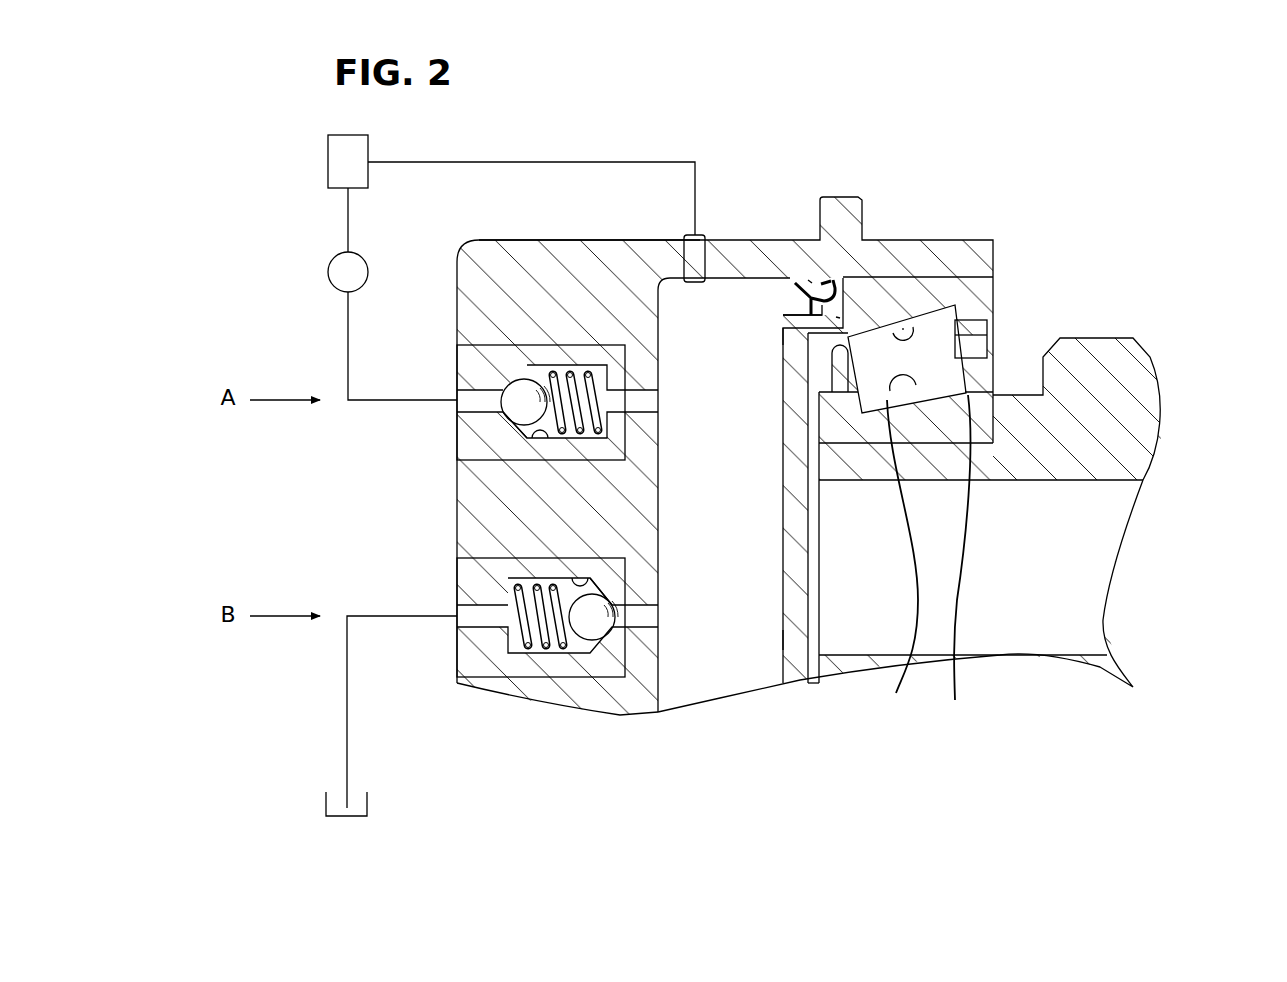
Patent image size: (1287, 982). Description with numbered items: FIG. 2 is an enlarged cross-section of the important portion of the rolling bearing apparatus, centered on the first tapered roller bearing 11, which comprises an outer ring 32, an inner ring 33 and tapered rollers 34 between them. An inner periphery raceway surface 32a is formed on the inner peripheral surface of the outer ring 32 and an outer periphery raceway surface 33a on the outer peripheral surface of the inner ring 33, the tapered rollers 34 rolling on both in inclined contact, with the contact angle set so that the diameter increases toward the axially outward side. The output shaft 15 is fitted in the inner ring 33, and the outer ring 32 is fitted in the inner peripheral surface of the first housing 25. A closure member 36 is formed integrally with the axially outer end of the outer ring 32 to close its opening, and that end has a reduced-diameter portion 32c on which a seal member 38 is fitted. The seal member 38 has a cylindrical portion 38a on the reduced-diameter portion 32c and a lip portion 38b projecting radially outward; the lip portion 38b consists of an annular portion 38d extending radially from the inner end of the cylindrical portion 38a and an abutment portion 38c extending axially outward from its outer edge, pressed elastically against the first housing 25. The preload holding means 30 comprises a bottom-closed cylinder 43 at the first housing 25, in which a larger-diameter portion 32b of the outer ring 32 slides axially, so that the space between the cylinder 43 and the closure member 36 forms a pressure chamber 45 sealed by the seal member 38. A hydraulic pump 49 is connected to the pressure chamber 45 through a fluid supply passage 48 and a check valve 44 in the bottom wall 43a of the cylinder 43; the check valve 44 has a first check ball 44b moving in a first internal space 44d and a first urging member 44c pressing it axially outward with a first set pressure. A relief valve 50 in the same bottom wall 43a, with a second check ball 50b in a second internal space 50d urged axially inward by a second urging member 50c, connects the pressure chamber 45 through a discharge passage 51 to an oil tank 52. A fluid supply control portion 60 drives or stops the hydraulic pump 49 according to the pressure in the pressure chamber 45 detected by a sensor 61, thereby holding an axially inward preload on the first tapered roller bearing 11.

The first tapered roller bearing 11 is at (995, 243).
The output shaft 15 is at (1135, 410).
The first housing 25 is at (566, 236).
The preload holding means 30 is at (340, 478).
The outer ring 32 is at (944, 294).
The inner periphery raceway surface 32a is at (903, 328).
The larger-diameter portion 32b is at (942, 290).
The reduced-diameter portion 32c is at (786, 330).
The inner ring 33 is at (958, 562).
The outer periphery raceway surface 33a is at (896, 563).
The tapered rollers 34 is at (960, 316).
The closure member 36 is at (783, 640).
The seal member 38 is at (806, 240).
The cylindrical portion 38a is at (785, 316).
The lip portion 38b is at (792, 288).
The abutment portion 38c is at (808, 280).
The annular portion 38d is at (842, 318).
The cylinder 43 is at (512, 266).
The bottom wall 43a is at (553, 680).
The check valve 44 is at (563, 436).
The first check ball 44b is at (500, 432).
The first urging member 44c is at (612, 420).
The first internal space 44d is at (545, 440).
The pressure chamber 45 is at (771, 675).
The fluid supply passage 48 is at (345, 322).
The hydraulic pump 49 is at (335, 258).
The relief valve 50 is at (521, 660).
The second check ball 50b is at (580, 655).
The second urging member 50c is at (505, 585).
The second internal space 50d is at (581, 582).
The discharge passage 51 is at (346, 686).
The oil tank 52 is at (334, 817).
The fluid supply control portion 60 is at (326, 152).
The sensor 61 is at (695, 285).